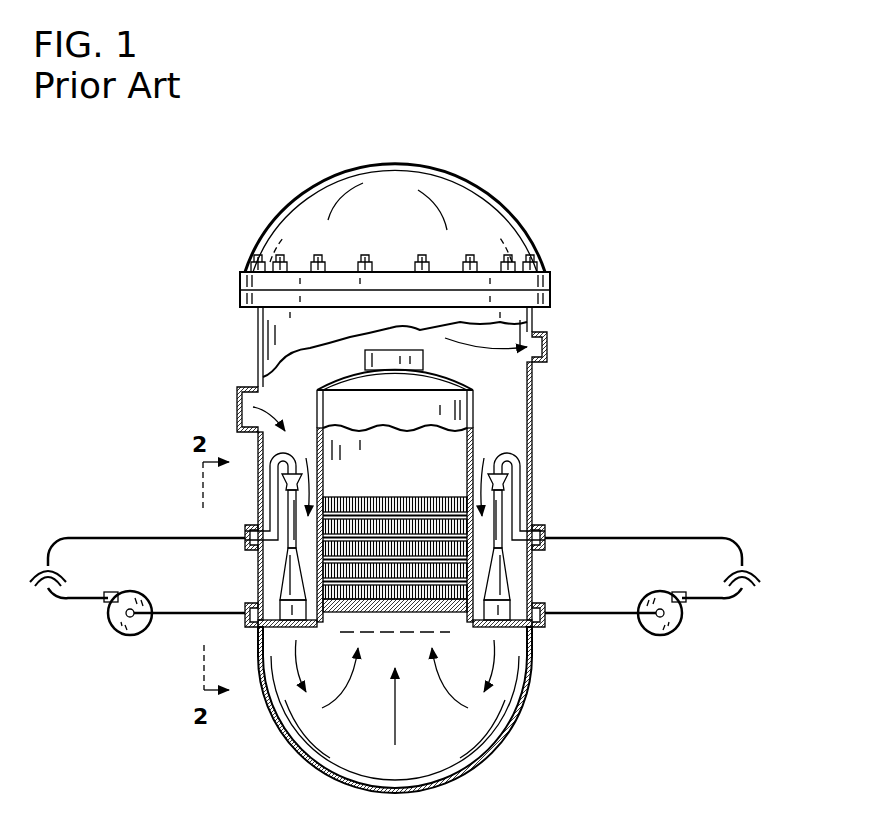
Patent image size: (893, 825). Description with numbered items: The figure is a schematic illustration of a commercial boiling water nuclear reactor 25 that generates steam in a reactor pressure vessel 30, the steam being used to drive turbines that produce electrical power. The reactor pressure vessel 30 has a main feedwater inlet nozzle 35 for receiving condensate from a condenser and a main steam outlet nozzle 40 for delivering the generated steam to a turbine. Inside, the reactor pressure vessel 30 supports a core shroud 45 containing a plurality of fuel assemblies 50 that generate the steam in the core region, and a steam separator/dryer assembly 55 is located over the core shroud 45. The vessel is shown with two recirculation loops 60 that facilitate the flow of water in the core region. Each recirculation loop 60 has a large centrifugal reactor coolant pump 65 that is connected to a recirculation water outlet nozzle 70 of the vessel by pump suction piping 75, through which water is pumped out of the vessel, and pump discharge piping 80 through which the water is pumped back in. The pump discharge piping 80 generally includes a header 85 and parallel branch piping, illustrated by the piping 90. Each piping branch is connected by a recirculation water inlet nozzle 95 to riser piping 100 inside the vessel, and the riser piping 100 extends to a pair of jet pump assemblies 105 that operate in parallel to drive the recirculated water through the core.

The boiling water nuclear reactor 25 is at (113, 311).
The reactor pressure vessel 30 is at (258, 348).
The main feedwater inlet nozzle 35 is at (240, 405).
The main steam outlet nozzle 40 is at (548, 346).
The core shroud 45 is at (473, 415).
The fuel assemblies 50 is at (402, 497).
The steam separator/dryer assembly 55 is at (365, 358).
The recirculation loop 60 is at (88, 526).
The reactor coolant pump 65 is at (133, 637).
The recirculation water outlet nozzle 70 is at (245, 608).
The pump suction piping 75 is at (183, 610).
The pump discharge piping 80 is at (72, 606).
The header 85 is at (53, 596).
The branch piping 90 is at (48, 557).
The recirculation water inlet nozzle 95 is at (245, 533).
The riser piping 100 is at (270, 500).
The jet pump assemblies 105 is at (305, 471).